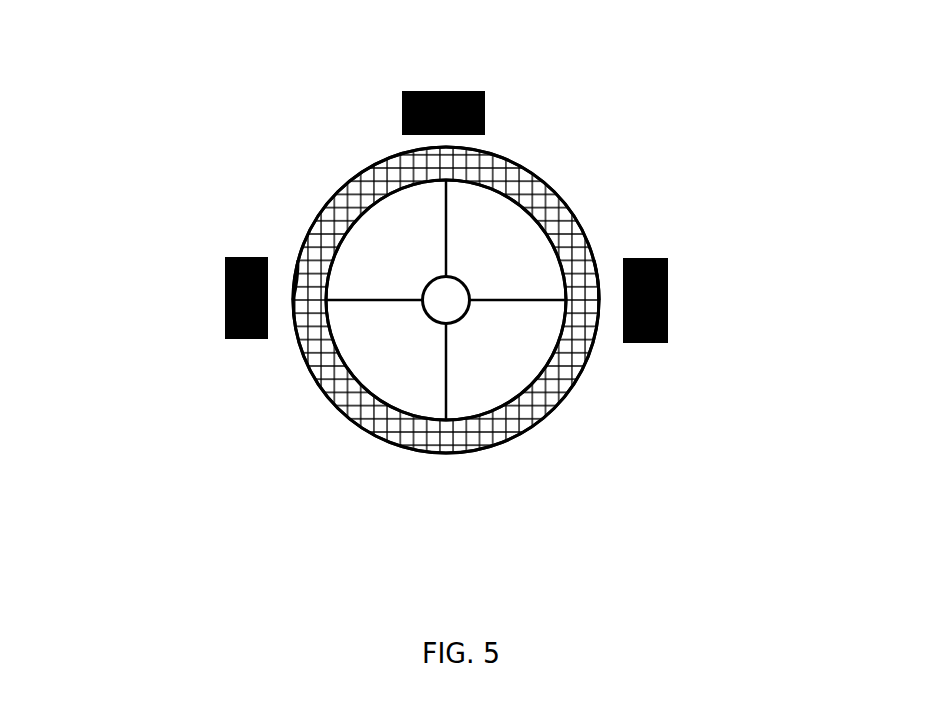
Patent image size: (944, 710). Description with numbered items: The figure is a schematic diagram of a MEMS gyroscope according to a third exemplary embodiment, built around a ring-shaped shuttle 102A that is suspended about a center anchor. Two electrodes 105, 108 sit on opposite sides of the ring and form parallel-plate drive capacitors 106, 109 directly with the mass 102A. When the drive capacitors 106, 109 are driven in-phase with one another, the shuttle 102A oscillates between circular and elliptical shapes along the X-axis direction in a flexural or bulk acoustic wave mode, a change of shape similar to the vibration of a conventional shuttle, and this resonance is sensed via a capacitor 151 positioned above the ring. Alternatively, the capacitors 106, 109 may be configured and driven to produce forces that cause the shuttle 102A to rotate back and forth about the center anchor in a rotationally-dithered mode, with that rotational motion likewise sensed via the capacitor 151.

The ring-shaped shuttle 102A is at (568, 385).
The sense capacitor 151 is at (482, 148).
The electrode 105 is at (217, 317).
The electrode 108 is at (675, 326).
The drive capacitor 106 is at (286, 260).
The drive capacitor 109 is at (612, 260).